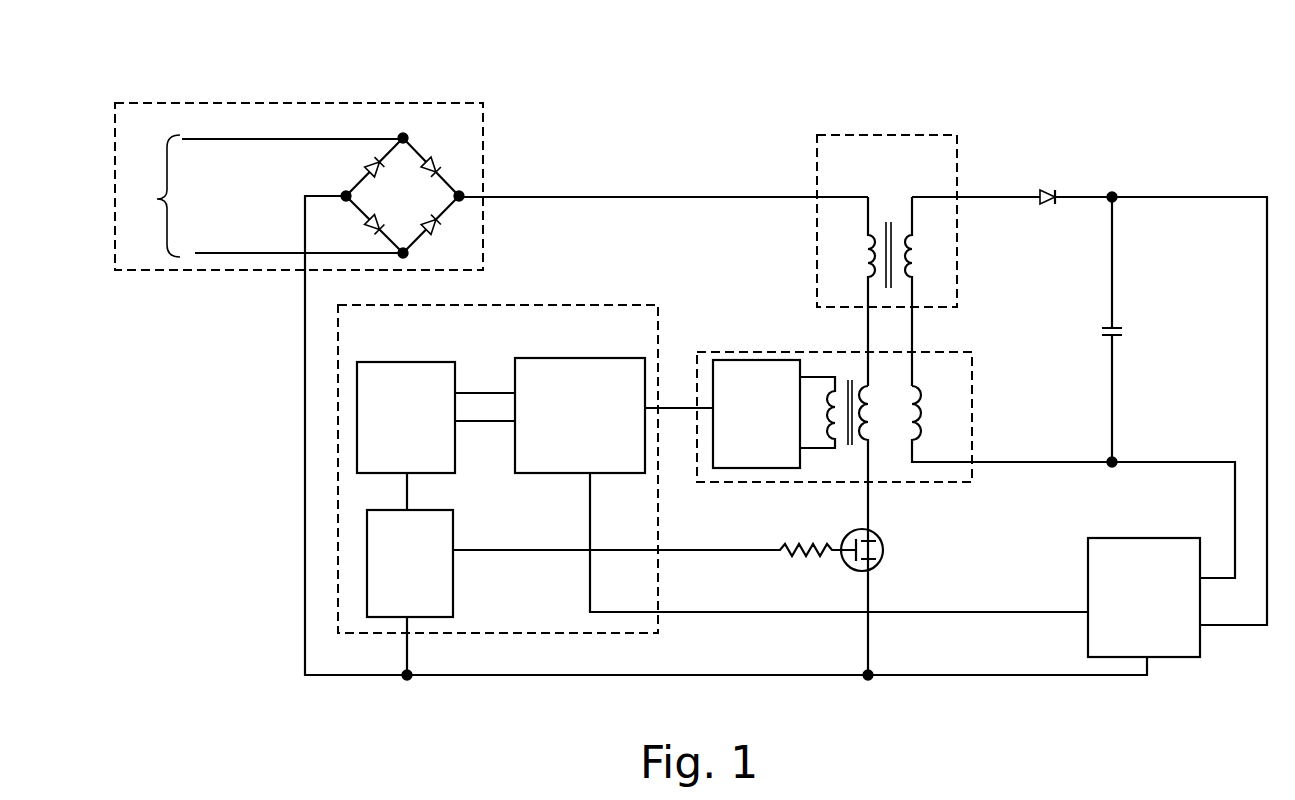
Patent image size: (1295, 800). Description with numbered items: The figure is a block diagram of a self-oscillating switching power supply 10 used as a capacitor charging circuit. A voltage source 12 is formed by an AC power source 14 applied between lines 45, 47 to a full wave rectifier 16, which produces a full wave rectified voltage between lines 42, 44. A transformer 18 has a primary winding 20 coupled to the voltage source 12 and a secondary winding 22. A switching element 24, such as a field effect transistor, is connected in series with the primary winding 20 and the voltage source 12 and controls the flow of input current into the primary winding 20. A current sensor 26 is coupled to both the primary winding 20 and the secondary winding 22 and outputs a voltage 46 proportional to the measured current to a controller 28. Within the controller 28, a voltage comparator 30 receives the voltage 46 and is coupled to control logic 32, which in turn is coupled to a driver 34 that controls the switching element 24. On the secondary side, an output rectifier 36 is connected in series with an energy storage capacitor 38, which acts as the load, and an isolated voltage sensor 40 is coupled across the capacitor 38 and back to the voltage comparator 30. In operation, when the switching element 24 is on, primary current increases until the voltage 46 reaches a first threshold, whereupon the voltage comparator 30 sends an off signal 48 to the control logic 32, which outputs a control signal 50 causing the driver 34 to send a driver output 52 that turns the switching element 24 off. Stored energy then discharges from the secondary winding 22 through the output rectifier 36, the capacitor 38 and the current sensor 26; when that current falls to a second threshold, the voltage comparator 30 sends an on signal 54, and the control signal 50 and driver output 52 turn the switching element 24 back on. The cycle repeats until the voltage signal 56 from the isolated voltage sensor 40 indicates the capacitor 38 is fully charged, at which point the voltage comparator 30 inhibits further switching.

The switching power supply 10 is at (1060, 100).
The voltage source 12 is at (407, 102).
The AC power source 14 is at (154, 196).
The full wave rectifier 16 is at (428, 172).
The transformer 18 is at (910, 133).
The primary winding 20 is at (862, 233).
The secondary winding 22 is at (915, 237).
The switching element 24 is at (880, 535).
The current sensor 26 is at (755, 350).
The controller 28 is at (533, 303).
The voltage comparator 30 is at (577, 357).
The control logic 32 is at (390, 360).
The driver 34 is at (455, 533).
The output rectifier 36 is at (1057, 208).
The energy storage capacitor 38 is at (1113, 333).
The isolated voltage sensor 40 is at (1180, 658).
The line 42 is at (578, 195).
The line 44 is at (303, 348).
The line 45 is at (200, 137).
The voltage 46 is at (682, 410).
The line 47 is at (212, 253).
The off signal 48 is at (502, 390).
The control signal 50 is at (407, 500).
The driver output 52 is at (523, 547).
The on signal 54 is at (495, 423).
The voltage signal 56 is at (985, 610).